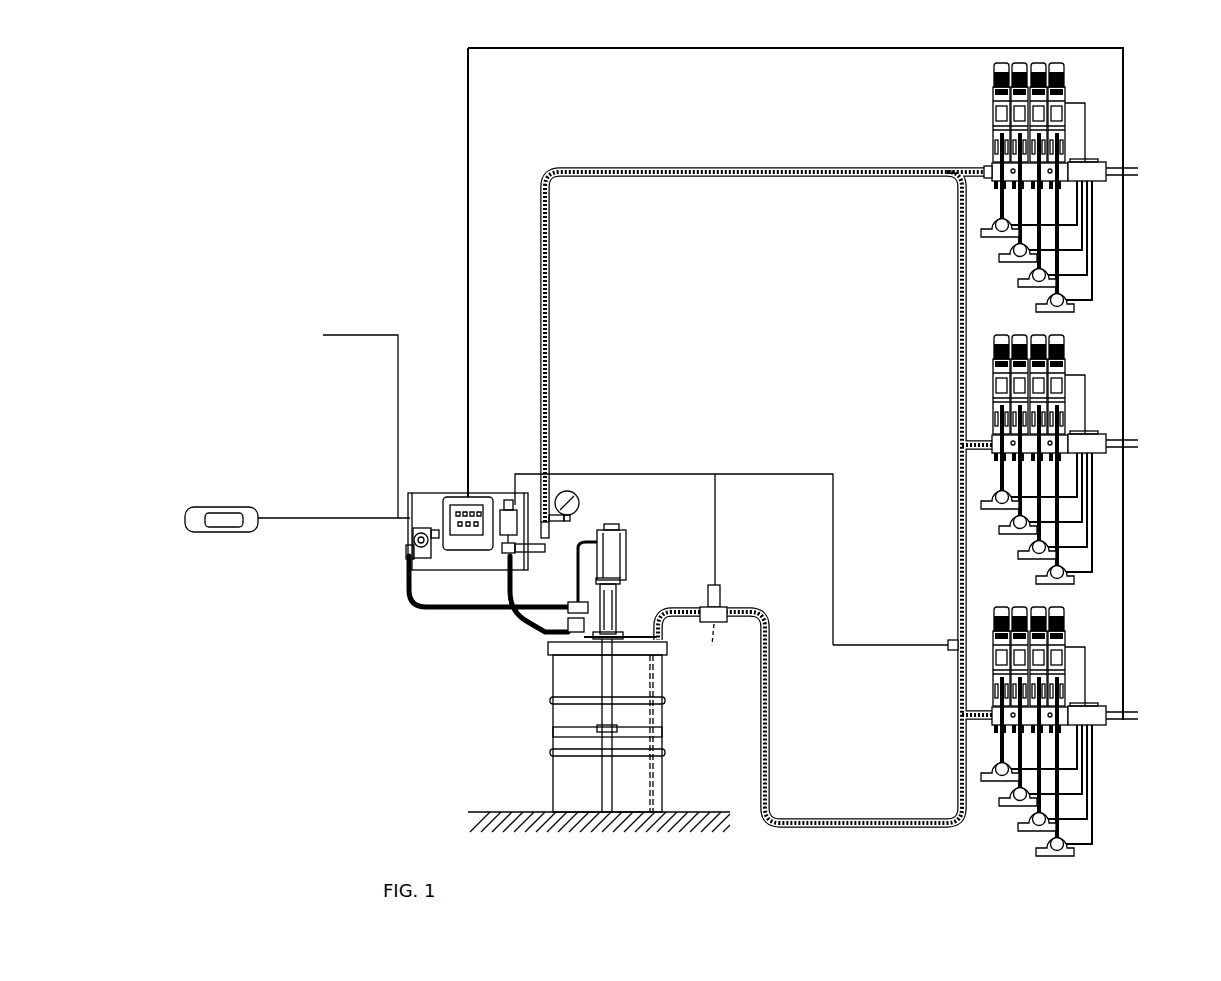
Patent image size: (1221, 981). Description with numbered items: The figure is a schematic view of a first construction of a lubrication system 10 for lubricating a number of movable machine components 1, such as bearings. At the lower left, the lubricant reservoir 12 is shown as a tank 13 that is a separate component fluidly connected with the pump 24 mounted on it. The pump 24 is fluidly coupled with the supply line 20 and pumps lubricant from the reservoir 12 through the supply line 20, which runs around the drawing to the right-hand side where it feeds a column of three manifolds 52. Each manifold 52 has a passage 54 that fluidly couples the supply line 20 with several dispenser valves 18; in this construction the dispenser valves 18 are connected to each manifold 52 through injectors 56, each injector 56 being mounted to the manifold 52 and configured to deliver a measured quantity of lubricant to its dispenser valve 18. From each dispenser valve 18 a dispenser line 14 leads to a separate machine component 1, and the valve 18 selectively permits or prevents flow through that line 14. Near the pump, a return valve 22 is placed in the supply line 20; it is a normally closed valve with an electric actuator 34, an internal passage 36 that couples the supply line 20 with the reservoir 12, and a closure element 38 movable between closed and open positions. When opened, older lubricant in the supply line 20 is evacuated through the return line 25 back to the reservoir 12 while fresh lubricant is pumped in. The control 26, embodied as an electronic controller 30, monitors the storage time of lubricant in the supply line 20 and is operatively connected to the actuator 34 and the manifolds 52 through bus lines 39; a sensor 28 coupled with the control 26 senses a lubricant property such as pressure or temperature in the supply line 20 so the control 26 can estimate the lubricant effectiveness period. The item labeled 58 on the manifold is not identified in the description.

The lubrication system 10 is at (360, 240).
The lubricant reservoir 12 is at (566, 725).
The tank 13 is at (553, 728).
The dispenser line 14 is at (1002, 203).
The dispenser valve 18 is at (988, 98).
The supply line 20 is at (757, 181).
The return valve 22 is at (727, 615).
The pump 24 is at (646, 562).
The return line 25 is at (683, 624).
The control 26 is at (531, 530).
The sensor 28 is at (947, 640).
The electronic controller 30 is at (468, 560).
The electric actuator 34 is at (708, 590).
The internal passage 36 is at (735, 612).
The closure element 38 is at (716, 645).
The bus line 39 is at (716, 521).
The manifold 52 is at (990, 163).
The manifold passage 54 is at (984, 168).
The injector 56 is at (990, 70).
The manifold outlet ports 58 is at (1017, 188).
The movable machine component 1 is at (975, 231).